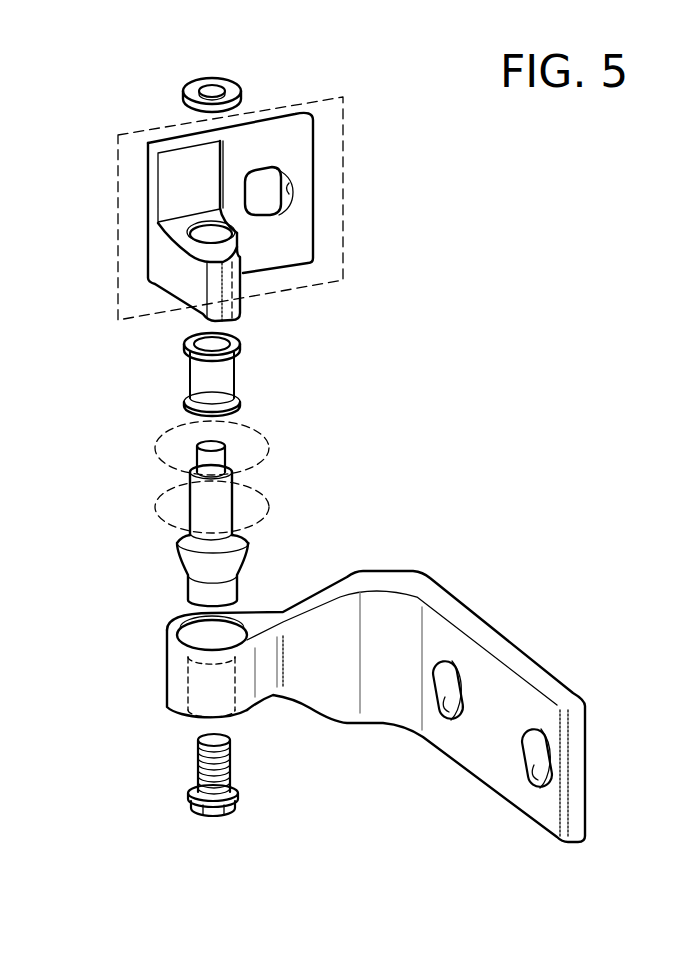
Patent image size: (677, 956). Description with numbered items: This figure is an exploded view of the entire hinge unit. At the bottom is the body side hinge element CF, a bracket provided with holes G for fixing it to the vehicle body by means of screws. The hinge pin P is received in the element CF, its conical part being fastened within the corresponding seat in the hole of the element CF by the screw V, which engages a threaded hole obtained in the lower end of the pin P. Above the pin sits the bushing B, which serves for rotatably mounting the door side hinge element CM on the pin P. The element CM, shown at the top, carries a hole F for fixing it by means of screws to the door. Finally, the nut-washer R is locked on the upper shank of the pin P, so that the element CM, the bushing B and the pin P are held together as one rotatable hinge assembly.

The nut-washer R is at (184, 81).
The door side hinge element CM is at (315, 217).
The hole F is at (292, 193).
The bushing B is at (210, 372).
The hinge pin P is at (182, 563).
The body side hinge element CF is at (399, 688).
The holes G is at (448, 718).
The screw V is at (231, 760).